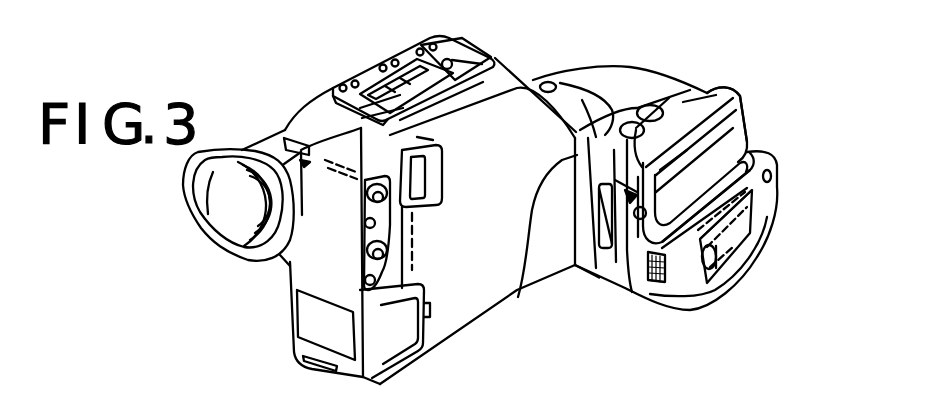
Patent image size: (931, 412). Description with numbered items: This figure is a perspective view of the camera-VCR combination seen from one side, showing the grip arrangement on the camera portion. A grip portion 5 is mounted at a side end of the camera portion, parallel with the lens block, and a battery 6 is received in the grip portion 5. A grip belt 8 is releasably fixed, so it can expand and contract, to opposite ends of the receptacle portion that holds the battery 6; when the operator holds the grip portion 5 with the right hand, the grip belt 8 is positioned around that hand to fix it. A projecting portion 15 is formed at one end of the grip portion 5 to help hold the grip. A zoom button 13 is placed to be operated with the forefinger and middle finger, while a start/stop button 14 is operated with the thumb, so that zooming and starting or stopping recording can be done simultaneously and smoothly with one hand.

The grip portion 5 is at (707, 100).
The battery 6 is at (730, 140).
The grip belt 8 is at (733, 238).
The zoom button 13 is at (635, 113).
The start/stop button 14 is at (600, 278).
The projecting portion 15 is at (626, 290).